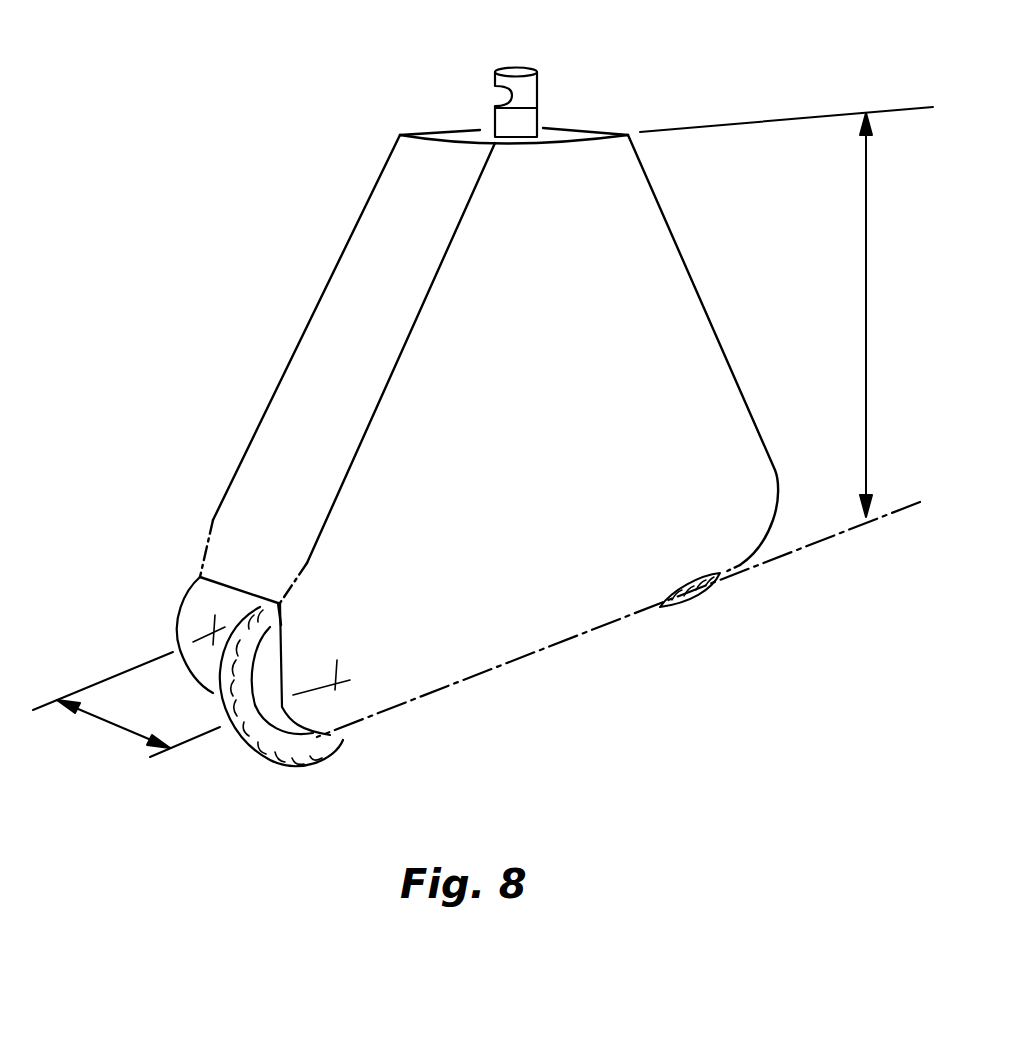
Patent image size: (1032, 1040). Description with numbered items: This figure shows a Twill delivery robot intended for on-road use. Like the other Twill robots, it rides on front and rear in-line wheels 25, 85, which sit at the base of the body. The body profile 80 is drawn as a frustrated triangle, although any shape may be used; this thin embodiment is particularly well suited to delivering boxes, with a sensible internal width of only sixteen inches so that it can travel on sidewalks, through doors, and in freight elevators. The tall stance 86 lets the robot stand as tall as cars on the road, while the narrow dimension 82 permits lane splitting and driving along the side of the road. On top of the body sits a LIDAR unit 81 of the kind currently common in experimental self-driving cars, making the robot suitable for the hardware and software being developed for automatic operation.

The profile 80 is at (568, 462).
The LIDAR unit 81 is at (537, 97).
The front wheel 25 is at (330, 758).
The rear wheel 85 is at (703, 603).
The tall stance 86 is at (867, 267).
The narrow dimension 82 is at (112, 727).